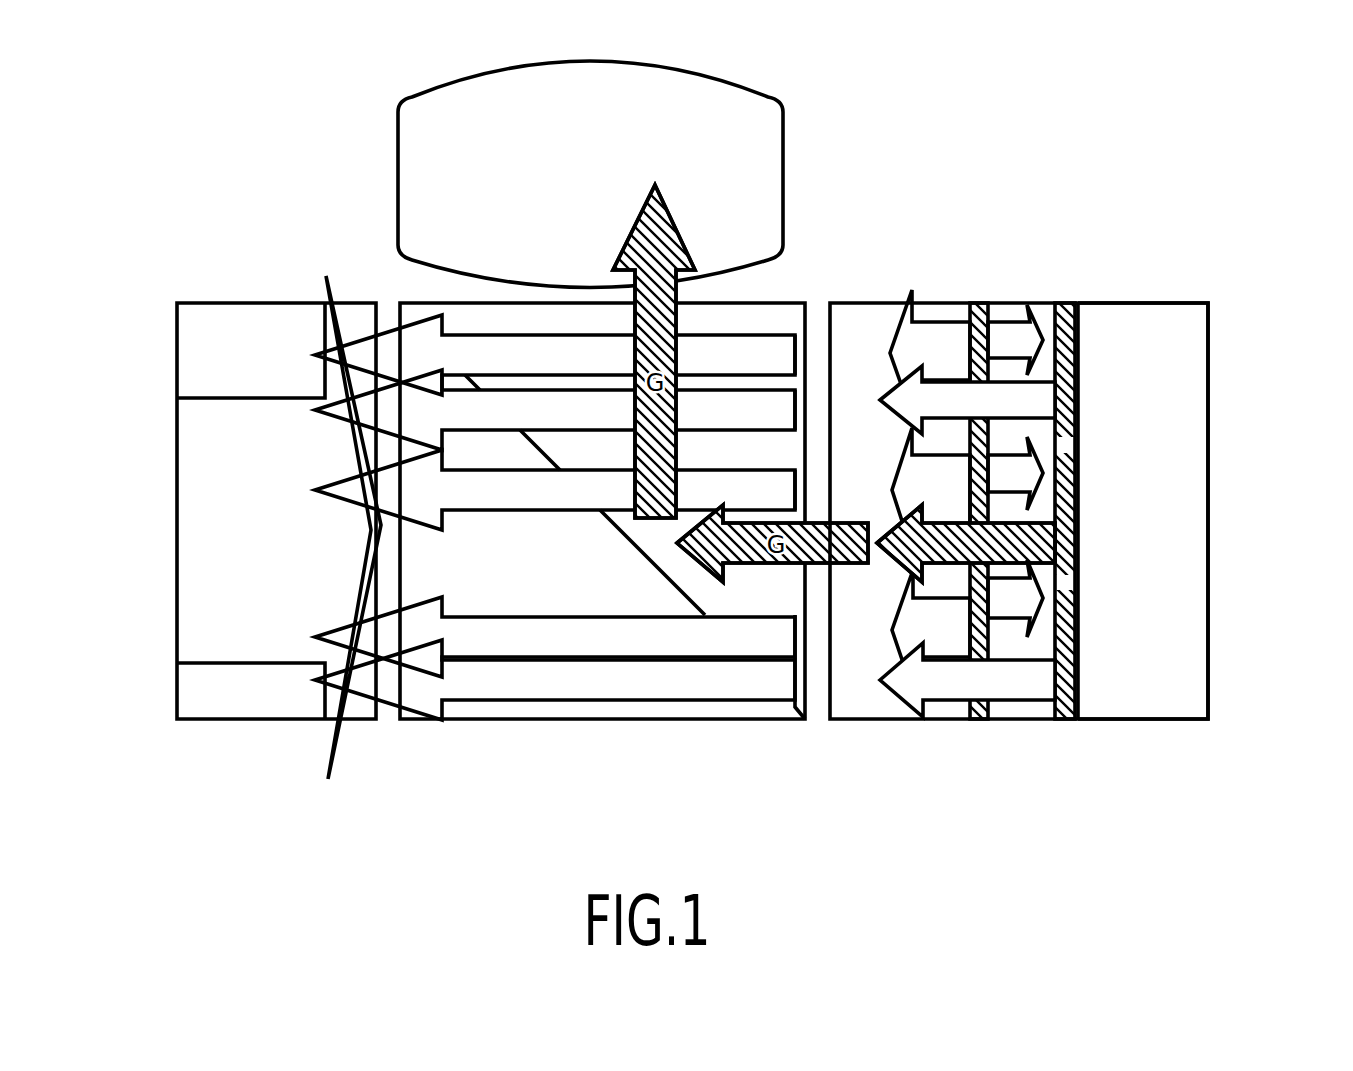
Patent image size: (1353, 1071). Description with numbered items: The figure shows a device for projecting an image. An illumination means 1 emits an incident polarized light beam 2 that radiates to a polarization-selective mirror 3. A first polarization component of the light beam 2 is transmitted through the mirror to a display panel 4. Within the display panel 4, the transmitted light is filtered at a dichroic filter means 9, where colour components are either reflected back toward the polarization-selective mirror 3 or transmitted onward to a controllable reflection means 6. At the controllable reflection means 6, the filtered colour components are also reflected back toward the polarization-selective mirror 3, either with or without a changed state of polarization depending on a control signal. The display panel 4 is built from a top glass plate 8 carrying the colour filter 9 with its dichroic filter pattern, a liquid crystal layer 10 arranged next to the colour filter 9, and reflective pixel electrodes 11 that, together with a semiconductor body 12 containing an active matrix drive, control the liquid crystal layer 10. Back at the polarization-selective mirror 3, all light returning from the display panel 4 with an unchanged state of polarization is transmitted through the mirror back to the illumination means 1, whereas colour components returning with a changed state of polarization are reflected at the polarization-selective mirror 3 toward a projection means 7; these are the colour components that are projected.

The illumination means 1 is at (258, 300).
The incident polarized light beam 2 is at (240, 628).
The polarization-selective mirror 3 is at (638, 547).
The display panel 4 is at (988, 728).
The controllable reflection means 6 is at (1058, 317).
The projection means 7 is at (783, 122).
The top glass plate 8 is at (875, 317).
The dichroic filter means 9 is at (977, 317).
The liquid crystal layer 10 is at (1040, 717).
The reflective pixel electrodes 11 is at (1078, 488).
The semiconductor body 12 is at (1160, 567).